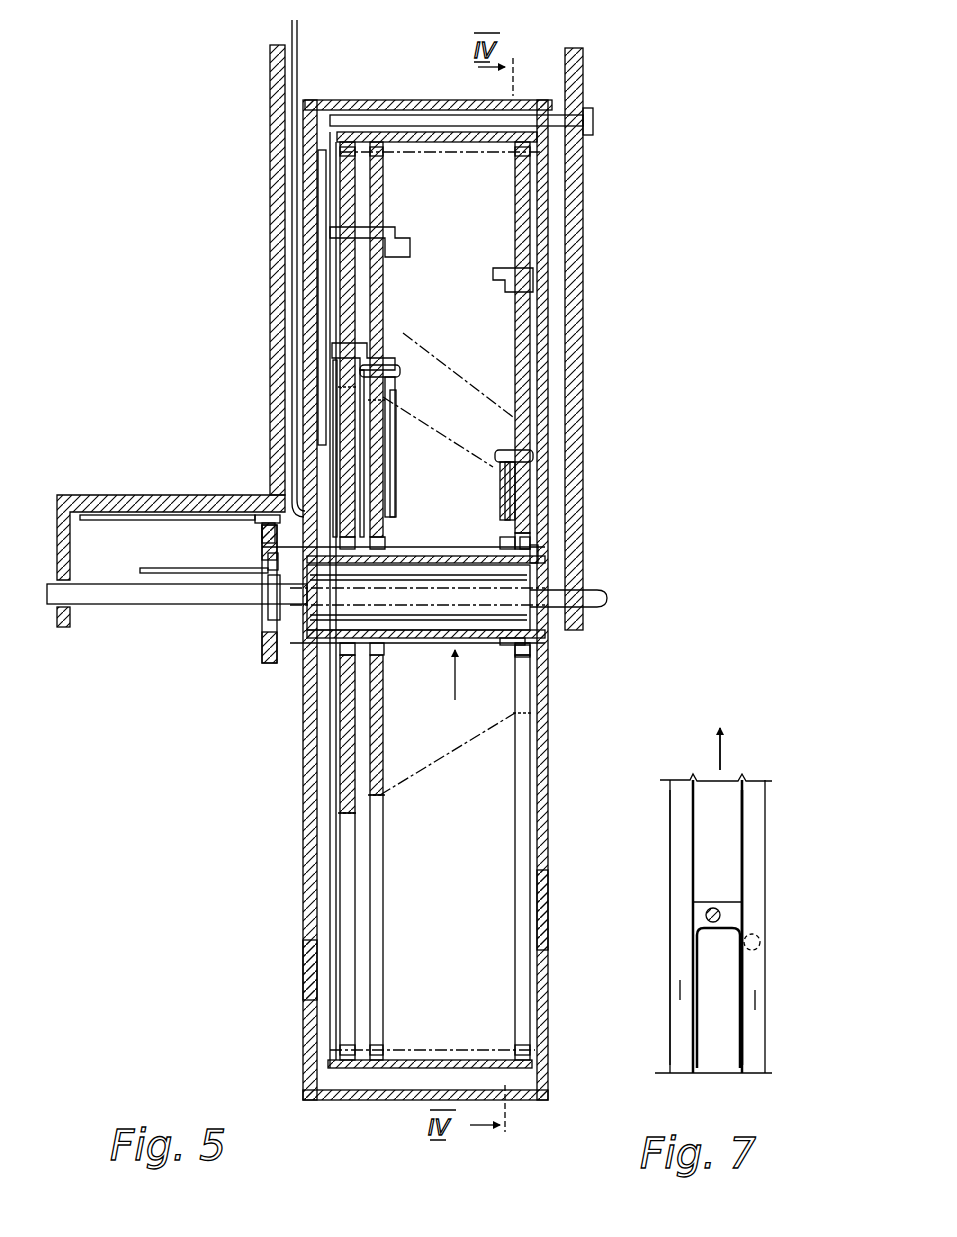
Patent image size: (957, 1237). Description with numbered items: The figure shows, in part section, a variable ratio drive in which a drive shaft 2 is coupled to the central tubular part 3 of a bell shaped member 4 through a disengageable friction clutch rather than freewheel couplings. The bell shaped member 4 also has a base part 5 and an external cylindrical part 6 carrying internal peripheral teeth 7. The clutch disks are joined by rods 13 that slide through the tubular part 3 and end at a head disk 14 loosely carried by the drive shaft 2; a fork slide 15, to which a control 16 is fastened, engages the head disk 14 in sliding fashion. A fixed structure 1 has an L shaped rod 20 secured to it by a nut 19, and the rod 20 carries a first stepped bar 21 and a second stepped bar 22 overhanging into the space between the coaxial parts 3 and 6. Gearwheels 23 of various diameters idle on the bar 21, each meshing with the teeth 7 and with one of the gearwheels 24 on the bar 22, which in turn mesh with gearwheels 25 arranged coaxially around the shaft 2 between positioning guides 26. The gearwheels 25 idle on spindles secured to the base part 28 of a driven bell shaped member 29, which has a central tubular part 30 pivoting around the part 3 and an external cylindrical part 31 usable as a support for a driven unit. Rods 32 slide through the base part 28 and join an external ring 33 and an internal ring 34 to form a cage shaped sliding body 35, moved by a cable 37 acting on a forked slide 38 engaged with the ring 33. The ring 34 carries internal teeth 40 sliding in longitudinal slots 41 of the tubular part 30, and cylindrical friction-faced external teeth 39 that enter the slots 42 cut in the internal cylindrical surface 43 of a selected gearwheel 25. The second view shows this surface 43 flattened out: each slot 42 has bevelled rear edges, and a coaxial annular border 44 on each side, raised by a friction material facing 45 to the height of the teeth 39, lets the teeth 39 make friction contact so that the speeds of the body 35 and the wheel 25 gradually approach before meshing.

In FIG. 5, the fixed structure 1 is at (277, 236).
In FIG. 5, the drive shaft 2 is at (178, 604).
In FIG. 5, the central tubular part 3 is at (428, 612).
In FIG. 5, the bell shaped member 4 is at (560, 574).
In FIG. 5, the base part 5 is at (558, 910).
In FIG. 5, the external cylindrical part 6 is at (515, 1067).
In FIG. 5, the internal peripheral teeth 7 is at (382, 150).
In FIG. 5, the rods 13 is at (266, 628).
In FIG. 5, the head disk 14 is at (270, 612).
In FIG. 5, the fork slide 15 is at (266, 565).
In FIG. 5, the control 16 is at (150, 574).
In FIG. 5, the nut 19 is at (590, 114).
In FIG. 5, the L shaped rod 20 is at (420, 118).
In FIG. 5, the first stepped bar 21 is at (392, 240).
In FIG. 5, the second stepped bar 22 is at (385, 368).
In FIG. 5, the gearwheels 23 is at (347, 186).
In FIG. 5, the gearwheels 24 is at (404, 340).
In FIG. 5, the gearwheels 25 is at (347, 426).
In FIG. 7, the gearwheels 25 is at (768, 800).
In FIG. 5, the positioning guides 26 is at (390, 450).
In FIG. 5, the base part 28 is at (300, 965).
In FIG. 5, the bell shaped member 29 is at (300, 832).
In FIG. 5, the central tubular part 30 is at (482, 641).
In FIG. 5, the external cylindrical part 31 is at (420, 1101).
In FIG. 5, the rods 32 is at (452, 550).
In FIG. 5, the external ring 33 is at (258, 517).
In FIG. 5, the internal ring 34 is at (530, 651).
In FIG. 5, the cage shaped sliding body 35 is at (458, 688).
In FIG. 5, the cable 37 is at (120, 500).
In FIG. 5, the forked slide 38 is at (268, 520).
In FIG. 5, the external teeth 39 is at (530, 545).
In FIG. 7, the external teeth 39 is at (722, 918).
In FIG. 5, the internal teeth 40 is at (540, 558).
In FIG. 5, the longitudinal slots 41 is at (492, 548).
In FIG. 5, the slots 42 is at (382, 652).
In FIG. 7, the slots 42 is at (700, 912).
In FIG. 7, the internal cylindrical surface 43 is at (718, 870).
In FIG. 5, the annular border 44 is at (385, 538).
In FIG. 7, the annular border 44 is at (676, 808).
In FIG. 7, the friction material facing 45 is at (682, 986).